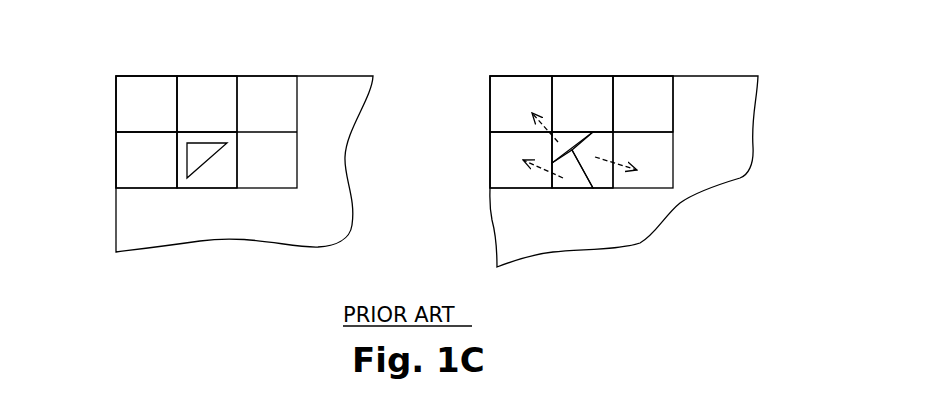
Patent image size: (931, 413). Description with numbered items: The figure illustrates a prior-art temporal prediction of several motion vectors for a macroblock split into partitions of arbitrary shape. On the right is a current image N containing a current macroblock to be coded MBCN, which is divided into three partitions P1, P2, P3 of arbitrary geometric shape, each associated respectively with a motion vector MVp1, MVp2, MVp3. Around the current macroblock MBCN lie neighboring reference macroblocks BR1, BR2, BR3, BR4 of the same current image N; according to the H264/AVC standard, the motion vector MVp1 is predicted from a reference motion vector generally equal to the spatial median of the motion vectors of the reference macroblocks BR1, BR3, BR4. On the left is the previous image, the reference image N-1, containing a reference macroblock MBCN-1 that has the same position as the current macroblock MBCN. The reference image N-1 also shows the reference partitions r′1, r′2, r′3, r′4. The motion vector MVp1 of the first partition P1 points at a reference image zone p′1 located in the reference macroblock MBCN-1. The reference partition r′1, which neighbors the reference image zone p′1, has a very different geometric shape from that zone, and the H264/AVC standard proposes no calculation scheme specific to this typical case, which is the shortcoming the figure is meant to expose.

The reference image N-1 is at (330, 77).
The reference macroblock MBCN-1 is at (228, 190).
The reference partition r′3 is at (142, 90).
The reference partition r′4 is at (193, 87).
The reference partition r′2 is at (131, 170).
The reference partition r′1 is at (202, 182).
The reference image zone p′1 is at (200, 148).
The current image N is at (702, 77).
The current macroblock MBCN is at (585, 190).
The reference macroblock BR2 is at (535, 90).
The reference macroblock BR3 is at (569, 97).
The reference macroblock BR4 is at (655, 93).
The reference macroblock BR1 is at (505, 158).
The first partition P1 is at (580, 133).
The third partition P3 is at (603, 145).
The second partition P2 is at (568, 180).
The motion vector MVp1 is at (534, 124).
The motion vector MVp2 is at (552, 165).
The motion vector MVp3 is at (622, 162).